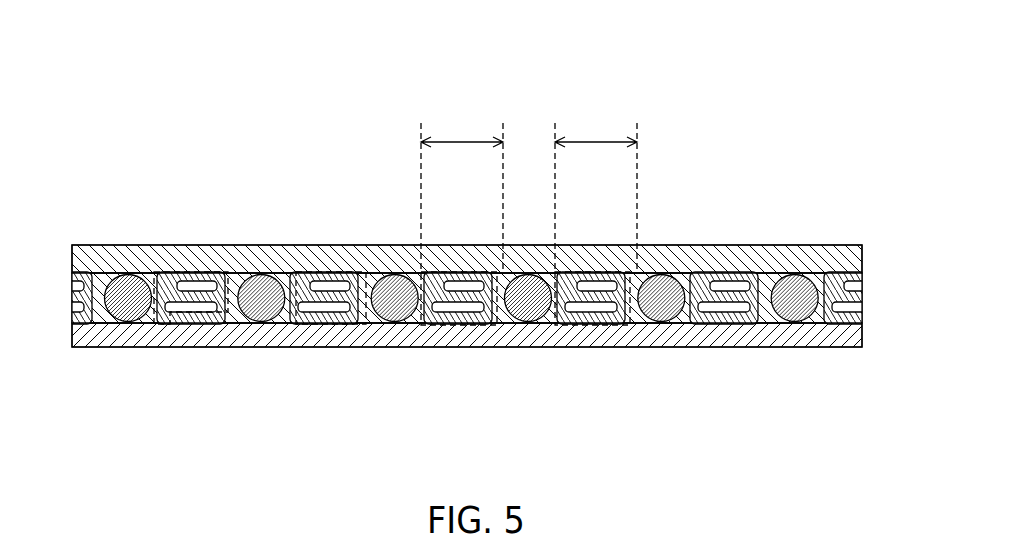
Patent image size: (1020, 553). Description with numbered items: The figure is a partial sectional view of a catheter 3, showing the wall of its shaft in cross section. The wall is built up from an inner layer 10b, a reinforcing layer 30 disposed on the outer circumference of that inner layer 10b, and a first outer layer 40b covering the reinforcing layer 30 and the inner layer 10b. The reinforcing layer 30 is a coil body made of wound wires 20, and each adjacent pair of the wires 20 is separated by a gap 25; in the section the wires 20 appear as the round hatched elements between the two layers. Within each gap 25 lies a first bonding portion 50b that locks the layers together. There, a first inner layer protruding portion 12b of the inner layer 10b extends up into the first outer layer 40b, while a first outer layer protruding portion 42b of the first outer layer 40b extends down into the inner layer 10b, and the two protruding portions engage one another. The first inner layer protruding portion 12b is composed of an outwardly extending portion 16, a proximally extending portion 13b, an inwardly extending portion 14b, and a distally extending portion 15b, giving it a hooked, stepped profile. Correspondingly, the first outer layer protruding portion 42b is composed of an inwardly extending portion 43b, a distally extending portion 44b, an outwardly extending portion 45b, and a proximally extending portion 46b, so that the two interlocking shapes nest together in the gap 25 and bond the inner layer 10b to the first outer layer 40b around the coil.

The catheter 3 is at (495, 65).
The inner layer 10b is at (830, 337).
The first outer layer 40b is at (820, 252).
The first outer layer protruding portion 42b is at (373, 318).
The first inner layer protruding portion 12b is at (181, 264).
The proximally extending portion 13b is at (181, 288).
The inwardly extending portion 14b is at (181, 289).
The distally extending portion 15b is at (161, 330).
The outwardly extending portion 16 is at (168, 287).
The proximally extending portion 46b is at (300, 286).
The inwardly extending portion 43b is at (300, 313).
The outwardly extending portion 45b is at (289, 346).
The distally extending portion 44b is at (333, 312).
The first bonding portion 50b is at (555, 325).
The reinforcing layer 30 is at (775, 365).
The wires 20 is at (795, 310).
The gap 25 is at (529, 189).